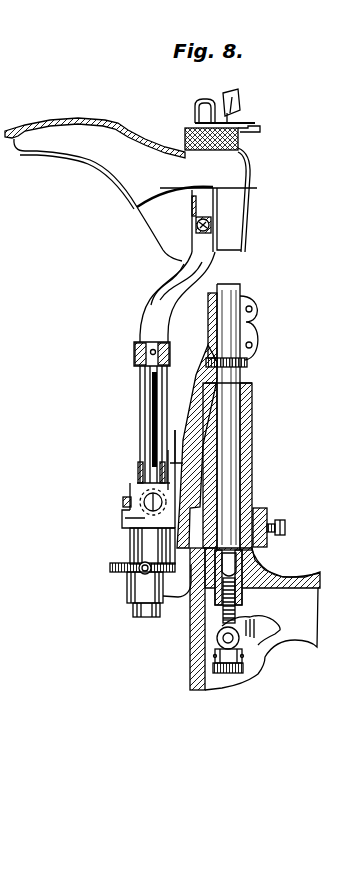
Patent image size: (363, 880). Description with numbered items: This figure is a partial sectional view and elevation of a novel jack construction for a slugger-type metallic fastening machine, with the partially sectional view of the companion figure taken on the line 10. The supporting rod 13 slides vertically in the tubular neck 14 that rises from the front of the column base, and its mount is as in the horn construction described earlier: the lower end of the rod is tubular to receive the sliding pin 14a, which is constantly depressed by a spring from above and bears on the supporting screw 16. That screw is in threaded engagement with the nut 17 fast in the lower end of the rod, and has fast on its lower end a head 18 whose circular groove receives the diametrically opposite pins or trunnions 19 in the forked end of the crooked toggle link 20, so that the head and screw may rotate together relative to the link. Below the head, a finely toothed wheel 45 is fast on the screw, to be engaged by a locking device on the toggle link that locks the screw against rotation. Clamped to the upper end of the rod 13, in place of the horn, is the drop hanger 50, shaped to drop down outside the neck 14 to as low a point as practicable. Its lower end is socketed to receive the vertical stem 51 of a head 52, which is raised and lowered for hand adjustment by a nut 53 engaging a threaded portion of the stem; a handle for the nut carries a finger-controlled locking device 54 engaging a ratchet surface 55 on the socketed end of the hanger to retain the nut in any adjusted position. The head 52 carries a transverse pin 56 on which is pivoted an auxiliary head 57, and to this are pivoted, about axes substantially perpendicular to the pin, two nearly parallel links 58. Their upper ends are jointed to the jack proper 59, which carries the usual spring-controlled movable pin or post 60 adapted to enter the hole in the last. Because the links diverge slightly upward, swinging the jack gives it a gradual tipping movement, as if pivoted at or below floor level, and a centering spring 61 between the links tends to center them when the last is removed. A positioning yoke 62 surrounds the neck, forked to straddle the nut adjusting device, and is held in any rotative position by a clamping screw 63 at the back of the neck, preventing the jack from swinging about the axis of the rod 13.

The section line 10— 10 is at (205, 243).
The supporting rod 13 is at (240, 365).
The tubular neck 14 is at (253, 427).
The sliding pin 14a is at (263, 557).
The supporting screw 16 is at (220, 603).
The nut 17 is at (243, 597).
The head 18 is at (220, 621).
The pins or trunnions 19 is at (238, 642).
The toggle link 20 is at (242, 622).
The finely toothed wheel 45 is at (243, 668).
The drop hanger 50 is at (195, 400).
The vertical stem 51 is at (133, 610).
The head 52 is at (130, 523).
The nut 53 is at (130, 547).
The finger-controlled locking device 54 is at (143, 587).
The ratchet surface 55 is at (110, 567).
The transverse pin 56 is at (143, 507).
The auxiliary head 57 is at (143, 472).
The links 58 is at (148, 421).
The jack proper 59 is at (220, 259).
The spring-controlled movable pin or post 60 is at (257, 188).
The centering spring 61 is at (140, 385).
The positioning yoke 62 is at (261, 509).
The clamping screw 63 is at (285, 525).